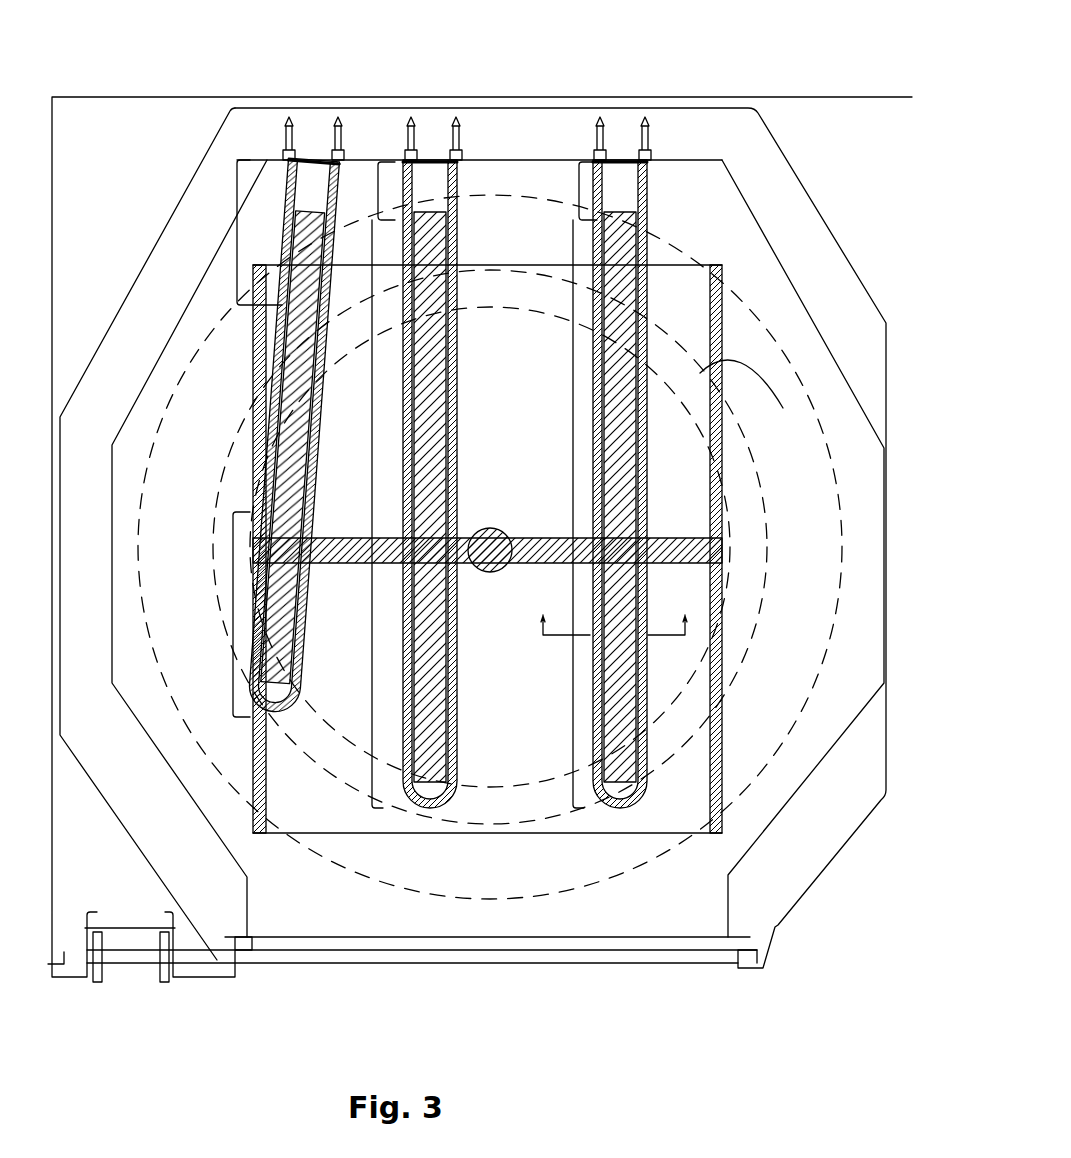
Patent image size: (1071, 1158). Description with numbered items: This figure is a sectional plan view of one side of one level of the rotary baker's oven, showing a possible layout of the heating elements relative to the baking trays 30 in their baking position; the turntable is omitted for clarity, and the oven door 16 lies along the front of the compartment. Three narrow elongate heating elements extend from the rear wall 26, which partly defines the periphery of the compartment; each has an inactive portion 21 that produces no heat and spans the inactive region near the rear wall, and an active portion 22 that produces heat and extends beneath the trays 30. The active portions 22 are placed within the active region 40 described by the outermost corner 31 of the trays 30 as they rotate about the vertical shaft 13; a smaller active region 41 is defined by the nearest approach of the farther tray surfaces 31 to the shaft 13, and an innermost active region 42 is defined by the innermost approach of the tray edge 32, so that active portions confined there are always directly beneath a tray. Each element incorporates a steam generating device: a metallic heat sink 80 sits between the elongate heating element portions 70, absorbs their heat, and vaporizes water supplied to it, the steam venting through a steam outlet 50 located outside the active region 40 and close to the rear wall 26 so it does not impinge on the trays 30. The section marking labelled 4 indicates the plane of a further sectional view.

The section line 4- 4 is at (613, 611).
The vertical shaft 13 is at (490, 528).
The oven door 16 is at (508, 946).
The inactive portion 21 is at (237, 218).
The active portion 22 is at (233, 515).
The rear wall 26 is at (553, 158).
The baking tray 30 is at (481, 335).
The outermost corner of the baking tray 31 is at (510, 265).
The inner edge of the baking tray 32 is at (250, 766).
The active region 40 is at (675, 336).
The smaller active region 41 is at (783, 330).
The innermost active region 42 is at (750, 398).
The steam outlet 50 is at (312, 178).
The elongate heating element portion 70 is at (297, 680).
The heat sink 80 is at (298, 600).